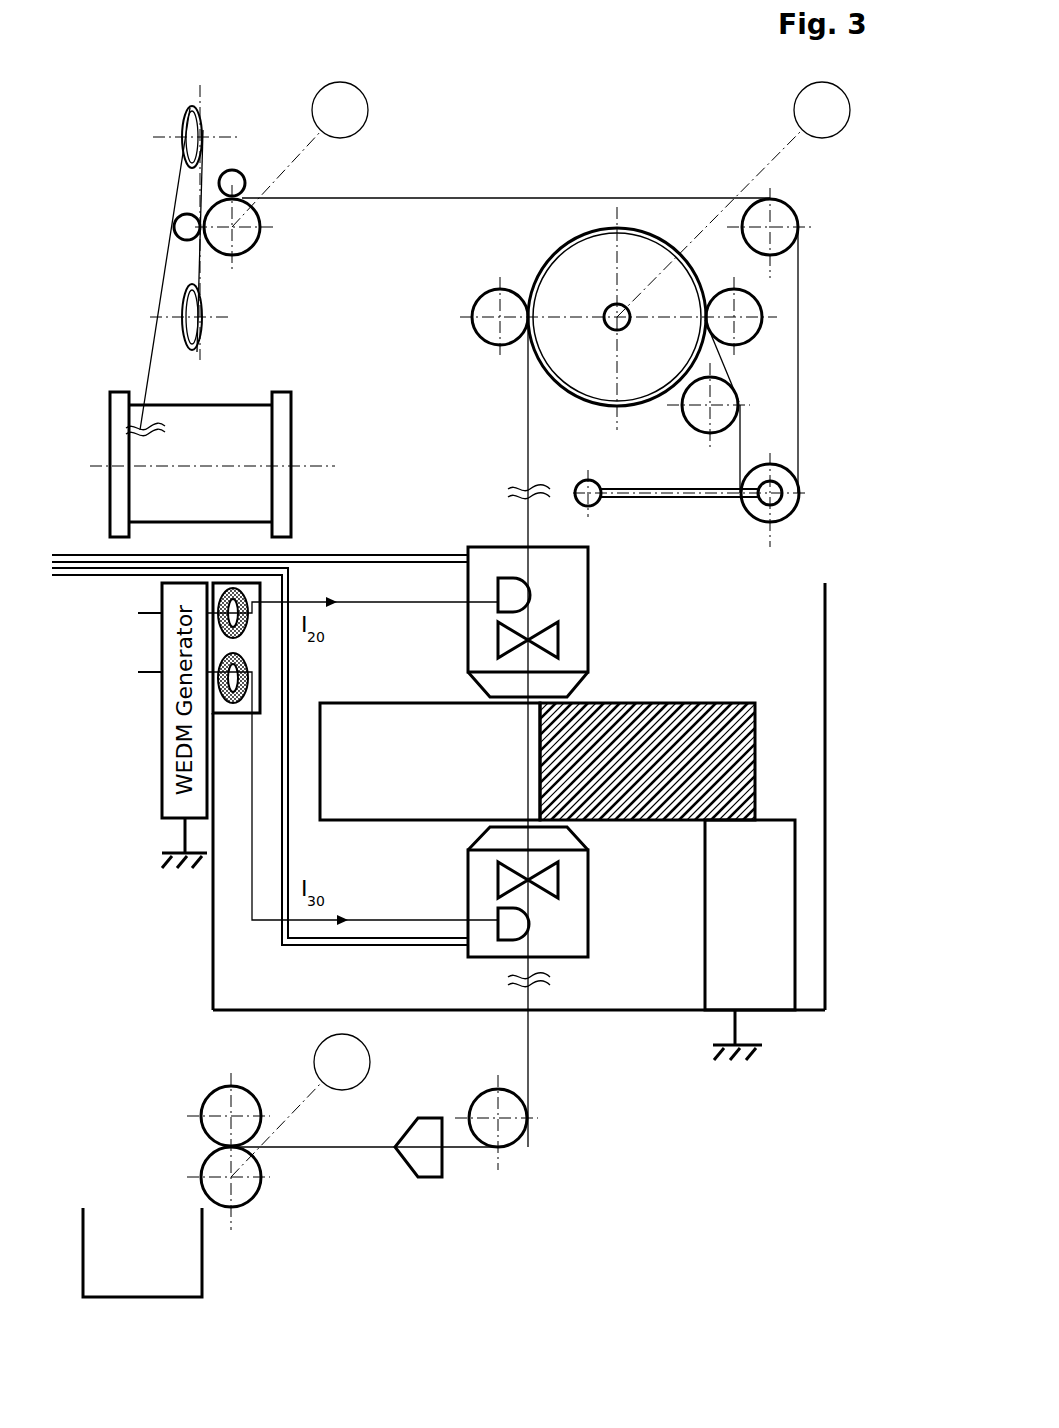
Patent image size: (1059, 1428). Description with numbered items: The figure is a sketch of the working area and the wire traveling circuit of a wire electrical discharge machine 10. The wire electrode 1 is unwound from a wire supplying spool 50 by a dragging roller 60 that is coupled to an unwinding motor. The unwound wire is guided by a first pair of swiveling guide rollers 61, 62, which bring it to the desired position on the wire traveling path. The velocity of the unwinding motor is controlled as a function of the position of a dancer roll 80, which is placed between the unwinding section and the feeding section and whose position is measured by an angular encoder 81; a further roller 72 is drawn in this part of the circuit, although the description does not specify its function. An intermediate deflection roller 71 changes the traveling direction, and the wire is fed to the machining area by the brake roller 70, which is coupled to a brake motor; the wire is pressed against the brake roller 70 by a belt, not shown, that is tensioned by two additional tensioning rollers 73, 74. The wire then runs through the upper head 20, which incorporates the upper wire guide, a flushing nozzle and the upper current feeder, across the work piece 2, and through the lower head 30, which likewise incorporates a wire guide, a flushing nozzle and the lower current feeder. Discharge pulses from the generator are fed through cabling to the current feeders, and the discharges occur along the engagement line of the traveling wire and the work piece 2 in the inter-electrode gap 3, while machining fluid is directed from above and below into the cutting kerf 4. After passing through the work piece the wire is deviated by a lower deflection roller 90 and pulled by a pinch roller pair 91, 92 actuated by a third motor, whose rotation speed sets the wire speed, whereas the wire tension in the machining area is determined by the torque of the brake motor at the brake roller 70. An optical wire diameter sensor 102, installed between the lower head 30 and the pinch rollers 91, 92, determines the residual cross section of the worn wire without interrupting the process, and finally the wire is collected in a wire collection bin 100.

The wire electrode 1 is at (445, 185).
The work piece 2 is at (730, 722).
The inter-electrode gap 3 is at (522, 755).
The cutting kerf 4 is at (390, 740).
The wire electrical discharge machine 10 is at (760, 1297).
The upper head 20 is at (568, 587).
The lower head 30 is at (572, 895).
The wire supplying spool 50 is at (118, 440).
The dragging roller 60 is at (226, 245).
The swiveling guide roller 61 is at (183, 307).
The swiveling guide roller 62 is at (186, 114).
The brake roller 70 is at (583, 255).
The intermediate deflection roller 71 is at (785, 218).
The guide pulley 72 is at (723, 393).
The tensioning roller 73 is at (753, 307).
The tensioning roller 74 is at (487, 283).
The dancer roll 80 is at (793, 517).
The angular encoder 81 is at (592, 507).
The lower deflection roller 90 is at (507, 1137).
The pinch roller 91 is at (248, 1203).
The pinch roller 92 is at (160, 1175).
The wire collection bin 100 is at (203, 1283).
The optical wire diameter sensor 102 is at (433, 1160).